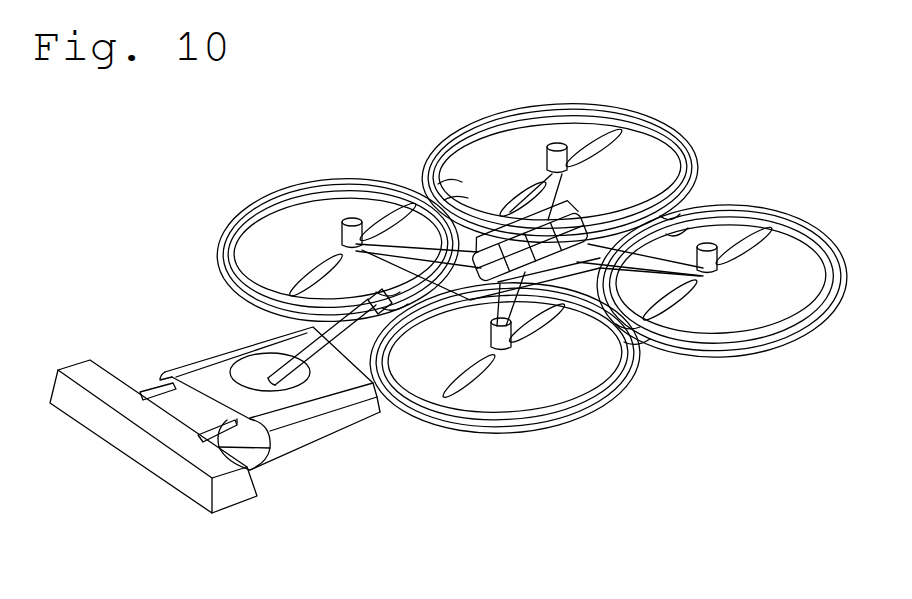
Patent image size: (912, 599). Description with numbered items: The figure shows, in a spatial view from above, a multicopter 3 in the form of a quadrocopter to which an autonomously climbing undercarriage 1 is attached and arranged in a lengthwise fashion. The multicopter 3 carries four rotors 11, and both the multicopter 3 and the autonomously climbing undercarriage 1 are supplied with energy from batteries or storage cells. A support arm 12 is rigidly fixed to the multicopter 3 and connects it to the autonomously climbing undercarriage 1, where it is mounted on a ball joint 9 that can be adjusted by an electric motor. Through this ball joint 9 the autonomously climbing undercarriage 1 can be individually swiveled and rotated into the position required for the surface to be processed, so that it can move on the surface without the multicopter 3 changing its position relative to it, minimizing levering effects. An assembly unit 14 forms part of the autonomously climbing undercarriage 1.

The autonomously climbing undercarriage 1 is at (237, 406).
The multicopter 3 is at (533, 274).
The ball joint 9 is at (265, 384).
The rotor 11 is at (667, 308).
The support arm 12 is at (313, 348).
The assembly unit 14 is at (178, 473).